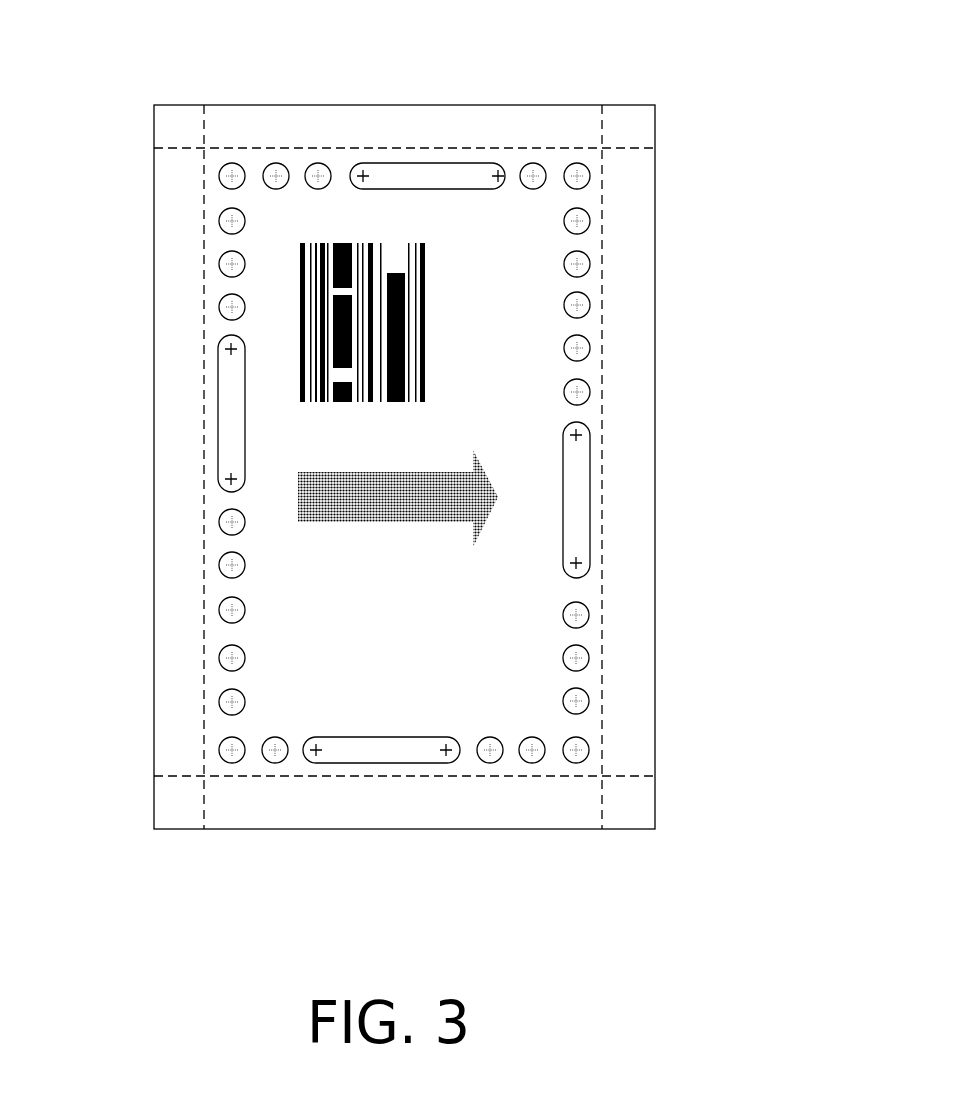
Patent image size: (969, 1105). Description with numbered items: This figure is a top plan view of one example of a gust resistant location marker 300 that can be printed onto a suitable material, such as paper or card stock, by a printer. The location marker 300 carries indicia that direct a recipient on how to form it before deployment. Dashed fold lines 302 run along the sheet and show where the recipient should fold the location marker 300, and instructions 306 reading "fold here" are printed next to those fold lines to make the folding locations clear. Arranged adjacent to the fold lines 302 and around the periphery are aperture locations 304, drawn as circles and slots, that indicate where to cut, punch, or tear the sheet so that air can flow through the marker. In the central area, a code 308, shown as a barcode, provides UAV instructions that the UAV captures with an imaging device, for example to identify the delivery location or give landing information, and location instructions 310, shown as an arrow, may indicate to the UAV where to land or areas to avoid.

The location marker 300 is at (408, 425).
The fold lines 302 is at (443, 460).
The aperture locations 304 is at (471, 463).
The instructions 306 is at (481, 463).
The code 308 is at (247, 284).
The location instructions 310 is at (284, 483).